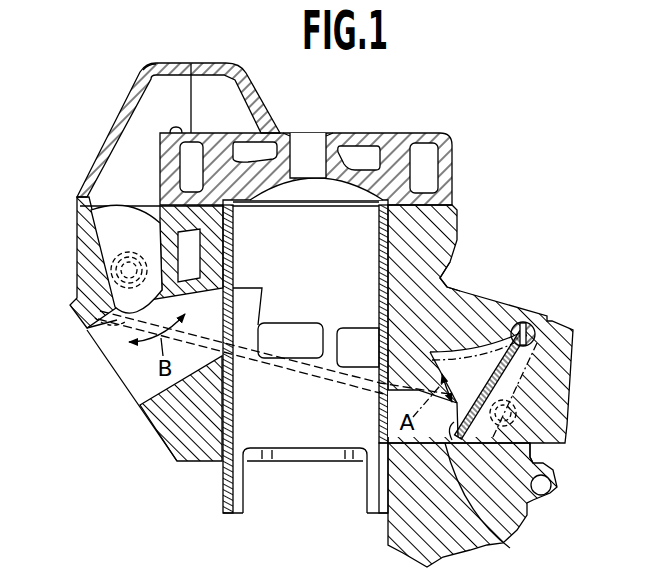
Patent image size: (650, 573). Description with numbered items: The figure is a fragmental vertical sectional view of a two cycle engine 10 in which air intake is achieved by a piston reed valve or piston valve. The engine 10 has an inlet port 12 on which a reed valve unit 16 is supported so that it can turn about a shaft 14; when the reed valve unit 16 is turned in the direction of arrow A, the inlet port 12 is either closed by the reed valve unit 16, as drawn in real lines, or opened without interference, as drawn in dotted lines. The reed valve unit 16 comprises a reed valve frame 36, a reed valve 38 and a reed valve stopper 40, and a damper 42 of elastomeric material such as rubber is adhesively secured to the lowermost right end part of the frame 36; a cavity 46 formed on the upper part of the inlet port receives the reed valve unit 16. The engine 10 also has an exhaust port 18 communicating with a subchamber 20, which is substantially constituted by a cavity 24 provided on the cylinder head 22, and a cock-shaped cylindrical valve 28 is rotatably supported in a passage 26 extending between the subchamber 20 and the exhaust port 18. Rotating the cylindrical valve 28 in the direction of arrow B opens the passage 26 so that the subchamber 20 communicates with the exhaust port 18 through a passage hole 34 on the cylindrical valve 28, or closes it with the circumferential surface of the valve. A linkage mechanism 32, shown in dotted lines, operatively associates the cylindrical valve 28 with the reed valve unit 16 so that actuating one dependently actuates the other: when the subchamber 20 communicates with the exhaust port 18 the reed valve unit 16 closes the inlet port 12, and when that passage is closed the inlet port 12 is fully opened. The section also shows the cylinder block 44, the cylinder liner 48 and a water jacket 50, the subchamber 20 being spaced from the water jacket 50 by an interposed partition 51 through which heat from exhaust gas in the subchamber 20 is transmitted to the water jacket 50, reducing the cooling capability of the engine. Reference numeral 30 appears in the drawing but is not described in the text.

The two cycle engine 10 is at (478, 124).
The inlet port 12 is at (555, 427).
The shaft 14 is at (536, 336).
The reed valve unit 16 is at (520, 378).
The exhaust port 18 is at (150, 403).
The subchamber 20 is at (103, 175).
The cylinder head 22 is at (381, 135).
The cavity 24 is at (137, 87).
The passage 26 is at (80, 207).
The cylindrical valve 28 is at (95, 267).
The housing lower wall 30 is at (77, 313).
The linkage mechanism 32 is at (331, 382).
The passage hole 34 is at (115, 227).
The reed valve frame 36 is at (532, 450).
The reed valve 38 is at (492, 520).
The reed valve stopper 40 is at (514, 320).
The damper 42 is at (525, 495).
The cylinder block 44 is at (452, 292).
The cavity 46 is at (448, 372).
The cylinder liner 48 is at (232, 413).
The water jacket 50 is at (188, 166).
The partition 51 is at (177, 132).